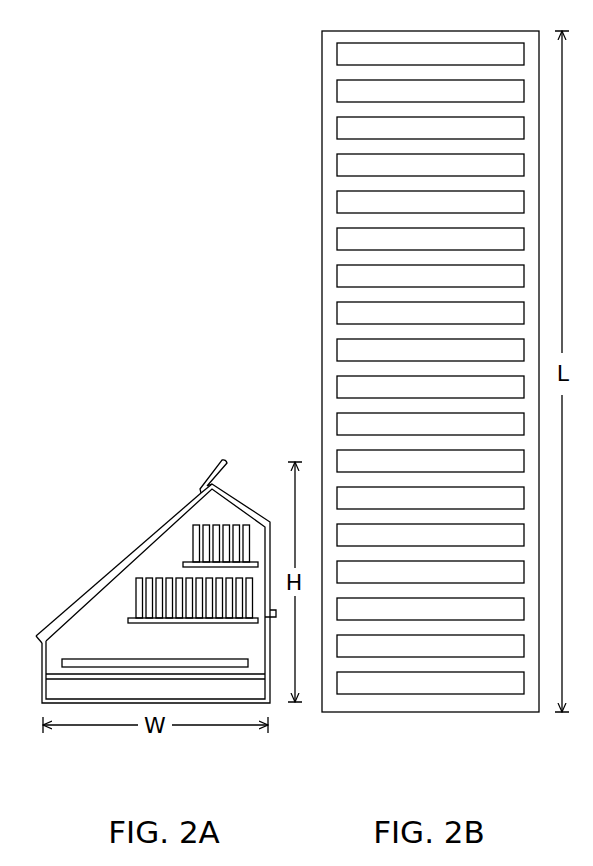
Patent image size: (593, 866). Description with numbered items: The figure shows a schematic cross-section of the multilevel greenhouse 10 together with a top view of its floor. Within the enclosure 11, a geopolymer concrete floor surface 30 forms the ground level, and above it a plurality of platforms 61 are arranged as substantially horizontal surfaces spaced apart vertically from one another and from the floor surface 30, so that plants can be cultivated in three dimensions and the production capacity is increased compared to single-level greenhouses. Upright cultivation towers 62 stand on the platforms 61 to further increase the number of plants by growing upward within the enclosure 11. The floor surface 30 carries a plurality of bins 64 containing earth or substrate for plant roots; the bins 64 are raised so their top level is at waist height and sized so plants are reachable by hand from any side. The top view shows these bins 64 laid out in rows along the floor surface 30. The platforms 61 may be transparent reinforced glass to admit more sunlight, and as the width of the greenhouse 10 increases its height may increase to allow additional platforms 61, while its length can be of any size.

In FIG. 2A, the multilevel greenhouse 10 is at (152, 412).
In FIG. 2A, the enclosure 11 is at (177, 653).
In FIG. 2A, the floor surface 30 is at (103, 680).
In FIG. 2B, the floor surface 30 is at (463, 704).
In FIG. 2A, the platforms 61 is at (129, 617).
In FIG. 2A, the cultivation towers 62 is at (138, 578).
In FIG. 2A, the bins 64 is at (77, 662).
In FIG. 2B, the bins 64 is at (348, 53).